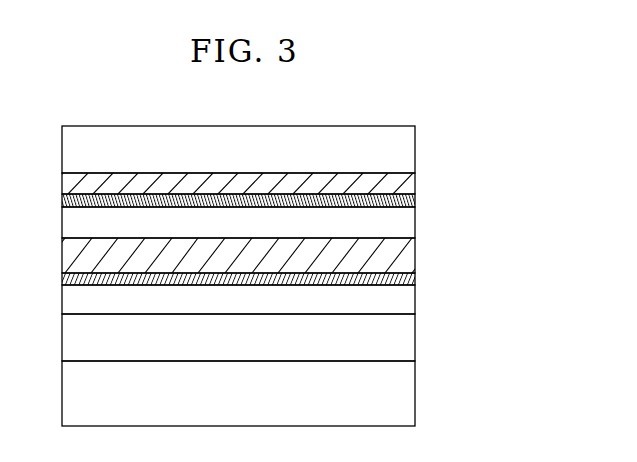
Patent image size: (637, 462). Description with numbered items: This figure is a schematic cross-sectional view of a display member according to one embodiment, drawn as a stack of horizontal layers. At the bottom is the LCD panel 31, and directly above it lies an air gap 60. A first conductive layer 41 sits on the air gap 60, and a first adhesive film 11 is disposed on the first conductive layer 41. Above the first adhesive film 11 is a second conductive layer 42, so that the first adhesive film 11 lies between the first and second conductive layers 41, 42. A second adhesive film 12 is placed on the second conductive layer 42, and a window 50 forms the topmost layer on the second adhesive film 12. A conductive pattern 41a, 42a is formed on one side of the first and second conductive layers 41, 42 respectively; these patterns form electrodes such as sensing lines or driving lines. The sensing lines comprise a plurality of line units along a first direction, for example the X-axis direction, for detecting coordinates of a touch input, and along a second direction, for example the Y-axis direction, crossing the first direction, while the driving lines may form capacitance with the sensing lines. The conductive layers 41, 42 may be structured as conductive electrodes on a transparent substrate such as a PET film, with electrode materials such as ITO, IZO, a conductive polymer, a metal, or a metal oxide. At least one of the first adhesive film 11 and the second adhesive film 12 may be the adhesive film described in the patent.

The window 50 is at (406, 150).
The second adhesive film 12 is at (406, 179).
The conductive pattern 42a is at (406, 198).
The second conductive layer 42 is at (406, 222).
The first adhesive film 11 is at (406, 253).
The conductive pattern 41a is at (406, 277).
The first conductive layer 41 is at (406, 301).
The air gap 60 is at (406, 332).
The LCD panel 31 is at (406, 386).